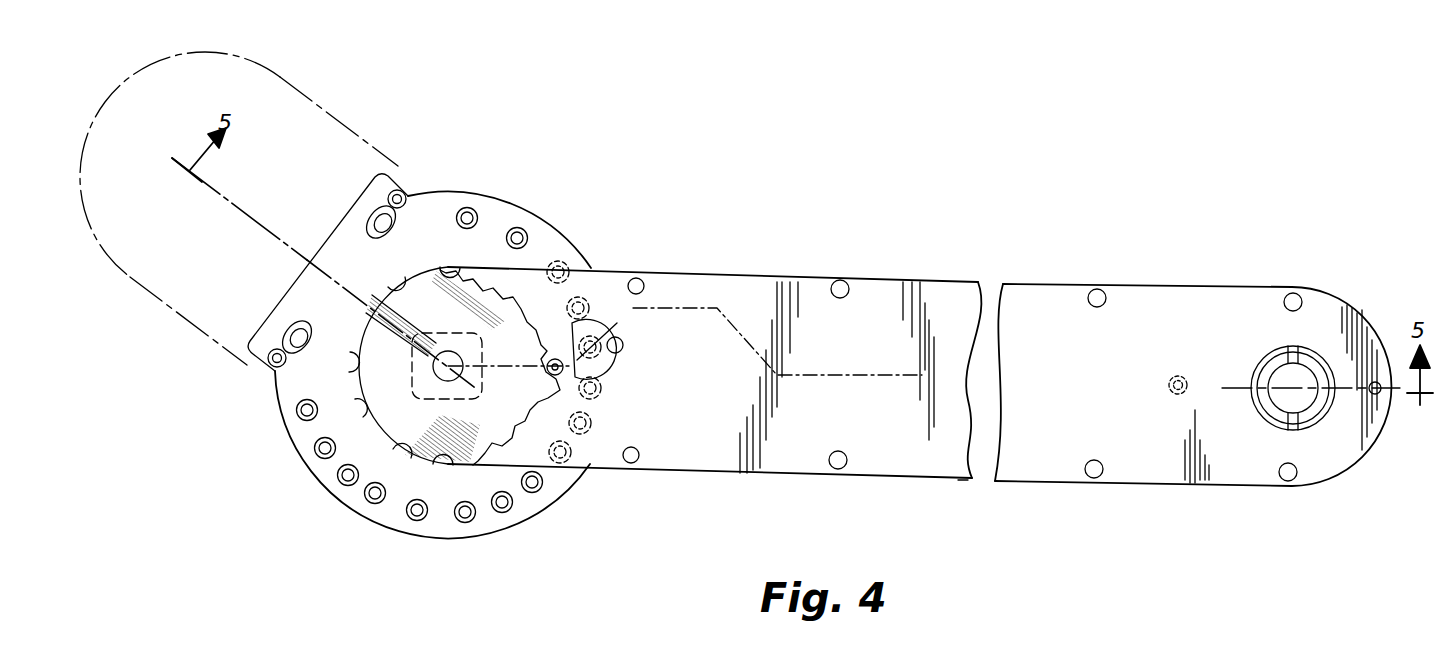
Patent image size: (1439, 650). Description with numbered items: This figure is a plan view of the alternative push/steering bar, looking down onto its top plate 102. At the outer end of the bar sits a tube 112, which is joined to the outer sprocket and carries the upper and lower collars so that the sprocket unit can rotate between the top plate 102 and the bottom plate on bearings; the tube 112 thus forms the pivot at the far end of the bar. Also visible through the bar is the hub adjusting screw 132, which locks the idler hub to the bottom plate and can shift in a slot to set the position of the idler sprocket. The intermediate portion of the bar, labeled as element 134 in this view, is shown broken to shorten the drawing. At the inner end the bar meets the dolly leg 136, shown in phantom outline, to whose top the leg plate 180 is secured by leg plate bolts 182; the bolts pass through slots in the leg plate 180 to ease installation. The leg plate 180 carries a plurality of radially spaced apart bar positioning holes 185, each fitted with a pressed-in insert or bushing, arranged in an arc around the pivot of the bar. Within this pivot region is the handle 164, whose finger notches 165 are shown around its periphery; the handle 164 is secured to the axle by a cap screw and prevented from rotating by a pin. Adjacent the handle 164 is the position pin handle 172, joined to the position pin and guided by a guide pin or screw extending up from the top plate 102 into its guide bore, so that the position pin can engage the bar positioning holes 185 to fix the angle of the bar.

The top plate 102 is at (1043, 303).
The tube 112 is at (1283, 352).
The hub adjusting screw 132 is at (1170, 392).
The arm plate 134 is at (841, 287).
The dolly leg 136 is at (332, 114).
The handle 164 is at (425, 433).
The finger notches 165 is at (528, 414).
The position pin handle 172 is at (604, 318).
The leg plate 180 is at (432, 204).
The leg plate bolts 182 is at (296, 300).
The bar positioning holes 185 is at (527, 230).